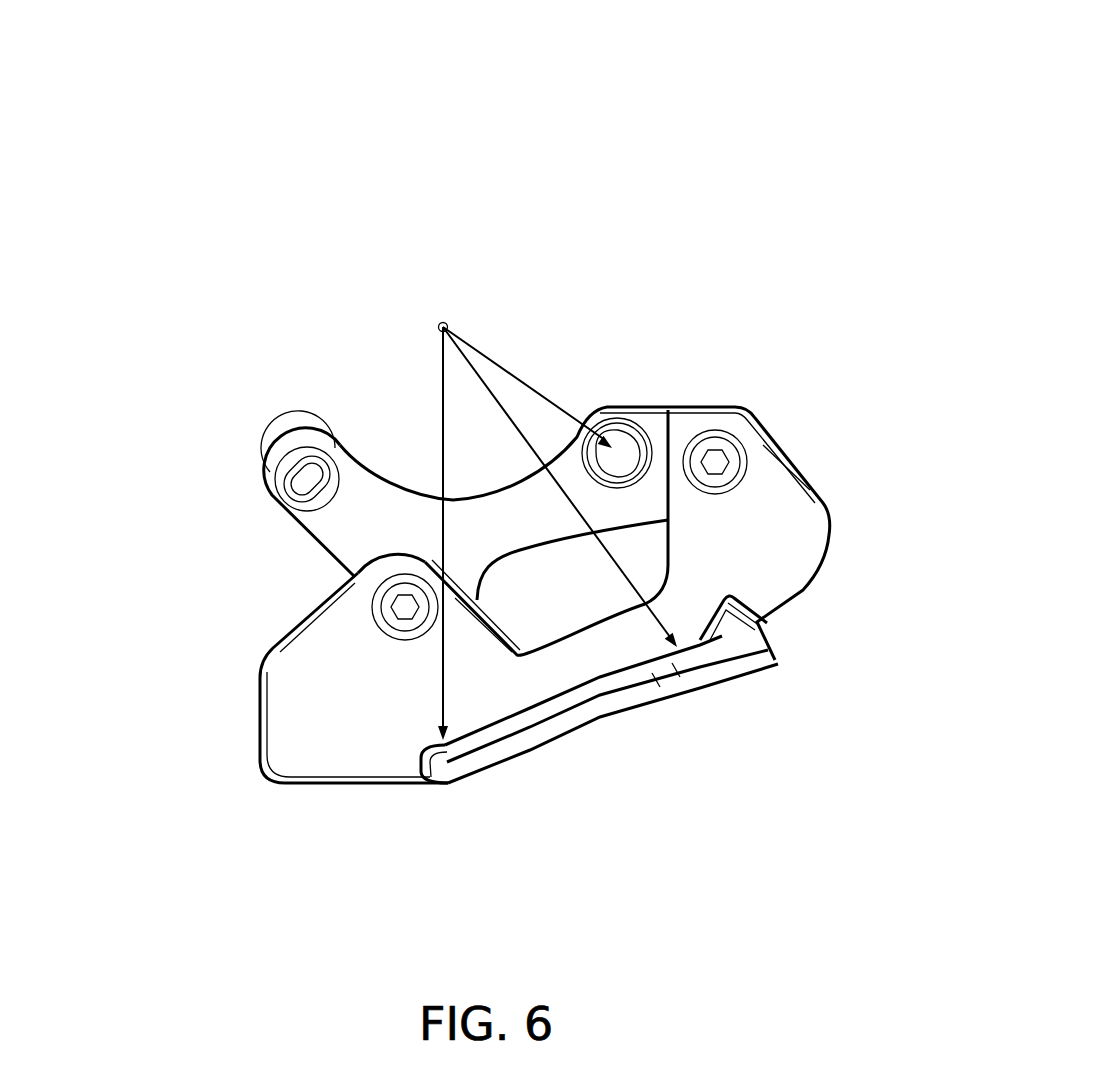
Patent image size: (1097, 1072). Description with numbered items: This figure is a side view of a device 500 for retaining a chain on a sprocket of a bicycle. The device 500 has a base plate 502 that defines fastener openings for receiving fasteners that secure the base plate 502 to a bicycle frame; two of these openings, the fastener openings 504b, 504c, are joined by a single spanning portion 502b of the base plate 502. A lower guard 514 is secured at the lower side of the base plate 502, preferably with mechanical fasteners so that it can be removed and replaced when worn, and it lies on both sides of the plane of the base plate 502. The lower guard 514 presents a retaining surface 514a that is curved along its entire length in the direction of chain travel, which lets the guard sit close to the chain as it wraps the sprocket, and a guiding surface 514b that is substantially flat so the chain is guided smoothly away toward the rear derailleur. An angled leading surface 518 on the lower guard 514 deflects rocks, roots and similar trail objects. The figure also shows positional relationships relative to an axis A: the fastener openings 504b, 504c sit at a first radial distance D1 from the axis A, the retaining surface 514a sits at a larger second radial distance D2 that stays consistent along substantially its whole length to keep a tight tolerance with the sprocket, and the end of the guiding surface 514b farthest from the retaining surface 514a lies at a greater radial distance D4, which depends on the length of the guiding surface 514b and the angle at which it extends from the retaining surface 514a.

The device for retaining a chain on a sprocket 500 is at (647, 87).
The base plate 502 is at (647, 492).
The spanning portion 502b is at (474, 520).
The fastener opening 504b is at (626, 422).
The fastener opening 504c is at (290, 468).
The lower guard 514 is at (550, 744).
The retaining surface 514a is at (692, 620).
The guiding surface 514b is at (432, 735).
The angled leading surface 518 is at (735, 640).
The axis A is at (438, 330).
The first radial distance D1 is at (512, 370).
The second radial distance D2 is at (577, 508).
The radial distance D4 is at (442, 413).